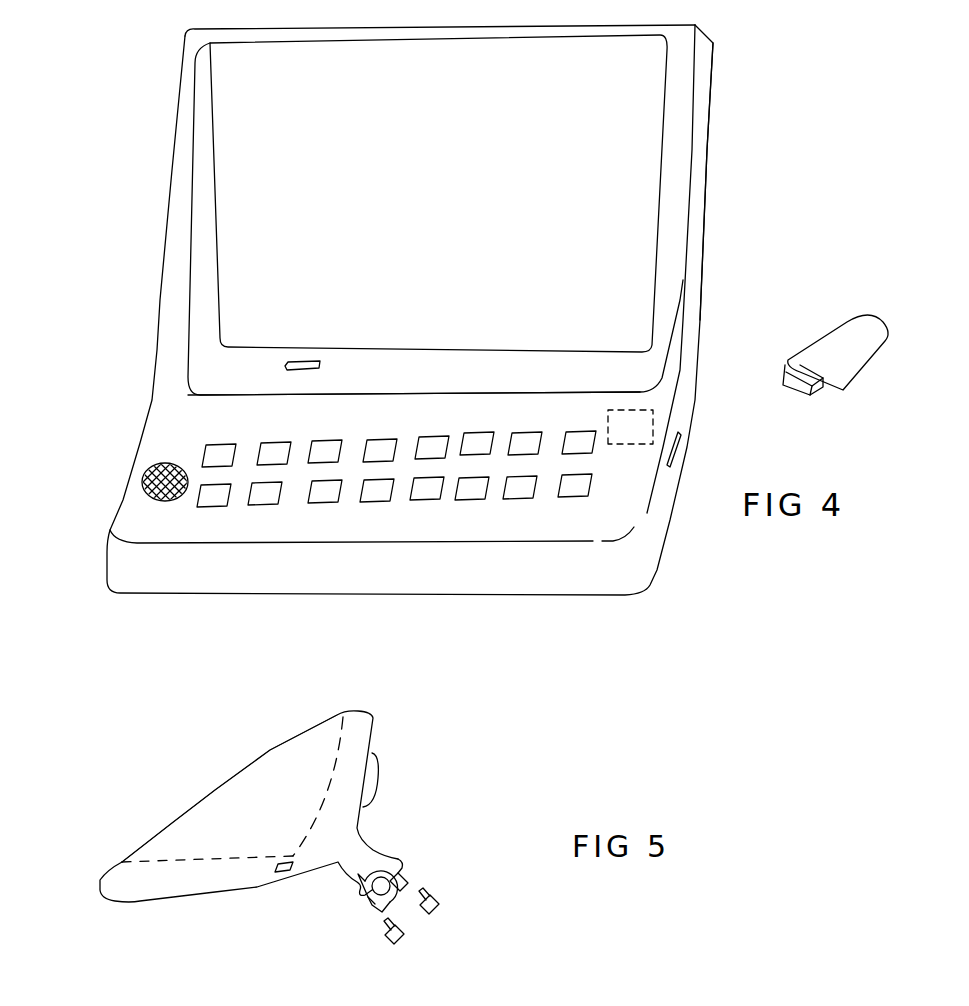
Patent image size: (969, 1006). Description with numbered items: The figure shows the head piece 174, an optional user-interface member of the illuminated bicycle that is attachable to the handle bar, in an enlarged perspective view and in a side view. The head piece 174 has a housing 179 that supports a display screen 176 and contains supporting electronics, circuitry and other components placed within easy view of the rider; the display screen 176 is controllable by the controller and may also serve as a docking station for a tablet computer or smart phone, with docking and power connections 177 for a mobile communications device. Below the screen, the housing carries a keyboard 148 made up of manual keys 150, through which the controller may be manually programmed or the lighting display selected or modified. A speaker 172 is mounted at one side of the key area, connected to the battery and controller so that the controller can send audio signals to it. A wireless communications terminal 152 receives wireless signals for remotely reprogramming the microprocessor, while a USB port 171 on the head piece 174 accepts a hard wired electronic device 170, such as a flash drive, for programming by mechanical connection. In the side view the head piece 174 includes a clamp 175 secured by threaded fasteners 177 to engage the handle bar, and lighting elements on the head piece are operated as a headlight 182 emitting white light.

In FIG. 4, the head piece 174 is at (158, 26).
In FIG. 5, the head piece 174 is at (163, 755).
In FIG. 4, the display screen 176 is at (432, 222).
In FIG. 5, the display screen 176 is at (283, 710).
In FIG. 4, the docking and power connections 177 is at (305, 362).
In FIG. 5, the docking and power connections 177 is at (403, 943).
In FIG. 4, the housing 179 is at (700, 200).
In FIG. 4, the keyboard 148 is at (152, 443).
In FIG. 4, the manual keys 150 is at (273, 443).
In FIG. 4, the speaker 172 is at (142, 483).
In FIG. 4, the wireless communications terminal 152 is at (647, 405).
In FIG. 4, the USB port 171 is at (680, 450).
In FIG. 4, the hard wired electronic device 170 is at (863, 355).
In FIG. 5, the headlight 182 is at (378, 775).
In FIG. 5, the clamp 175 is at (410, 845).